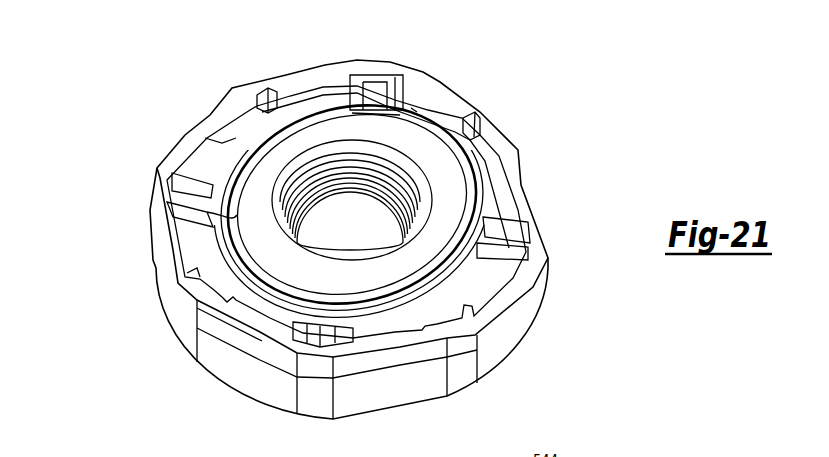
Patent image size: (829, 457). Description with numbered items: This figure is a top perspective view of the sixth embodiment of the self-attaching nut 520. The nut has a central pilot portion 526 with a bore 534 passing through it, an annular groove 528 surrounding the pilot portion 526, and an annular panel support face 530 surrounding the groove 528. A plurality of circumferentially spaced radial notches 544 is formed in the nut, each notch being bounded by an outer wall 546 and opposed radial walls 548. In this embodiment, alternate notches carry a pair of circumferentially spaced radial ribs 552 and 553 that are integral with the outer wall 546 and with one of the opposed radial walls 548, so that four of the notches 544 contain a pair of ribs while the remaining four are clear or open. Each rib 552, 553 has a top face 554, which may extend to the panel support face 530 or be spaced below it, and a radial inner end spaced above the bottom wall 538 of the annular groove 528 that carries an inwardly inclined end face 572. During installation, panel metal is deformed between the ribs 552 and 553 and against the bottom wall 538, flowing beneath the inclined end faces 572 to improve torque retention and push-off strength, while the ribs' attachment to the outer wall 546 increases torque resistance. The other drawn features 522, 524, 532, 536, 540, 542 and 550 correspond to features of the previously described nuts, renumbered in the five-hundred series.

The self-attaching nut 520 is at (469, 84).
The nut body 522 is at (202, 384).
The lock ring 524 is at (530, 192).
The central pilot portion 526 is at (318, 122).
The annular groove 528 is at (478, 177).
The panel support face 530 is at (502, 275).
The bore opening 532 is at (286, 162).
The bore 534 is at (375, 185).
The ring flange 536 is at (440, 285).
The bottom wall 538 is at (229, 274).
The top surface 540 is at (205, 138).
The cylindrical base 542 is at (237, 373).
The radial notches 544 is at (266, 98).
The outer wall 546 is at (257, 108).
The opposed radial walls 548 is at (478, 116).
The bottom portion 550 is at (462, 382).
The radial rib 552 is at (377, 72).
The radial rib 553 is at (530, 218).
The top face 554 is at (179, 168).
The inwardly inclined end face 572 is at (228, 210).